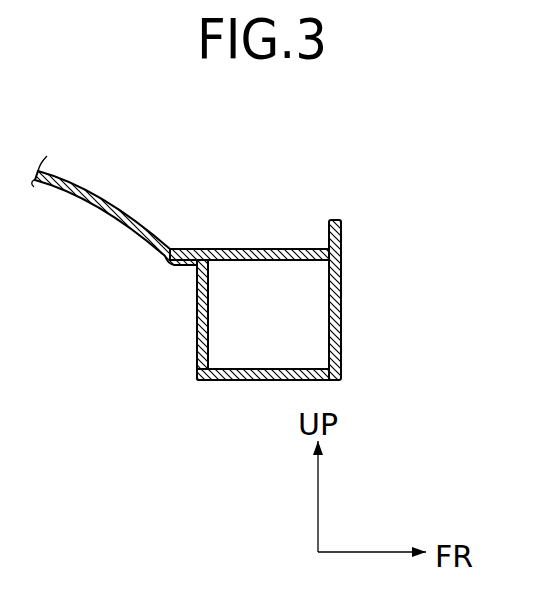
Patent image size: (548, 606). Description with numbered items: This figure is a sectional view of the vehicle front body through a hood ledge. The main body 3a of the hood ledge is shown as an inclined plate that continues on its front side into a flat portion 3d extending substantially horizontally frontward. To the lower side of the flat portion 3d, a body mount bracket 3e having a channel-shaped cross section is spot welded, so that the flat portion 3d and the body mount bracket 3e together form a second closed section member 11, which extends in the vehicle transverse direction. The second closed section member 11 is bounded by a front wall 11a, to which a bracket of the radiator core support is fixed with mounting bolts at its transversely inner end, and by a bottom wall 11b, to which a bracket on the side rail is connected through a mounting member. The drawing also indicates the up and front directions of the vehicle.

The main body 3a is at (90, 188).
The flat portion 3d is at (252, 249).
The body mount bracket 3e is at (235, 382).
The second closed section member 11 is at (330, 352).
The front wall 11a is at (341, 272).
The bottom wall 11b is at (278, 381).